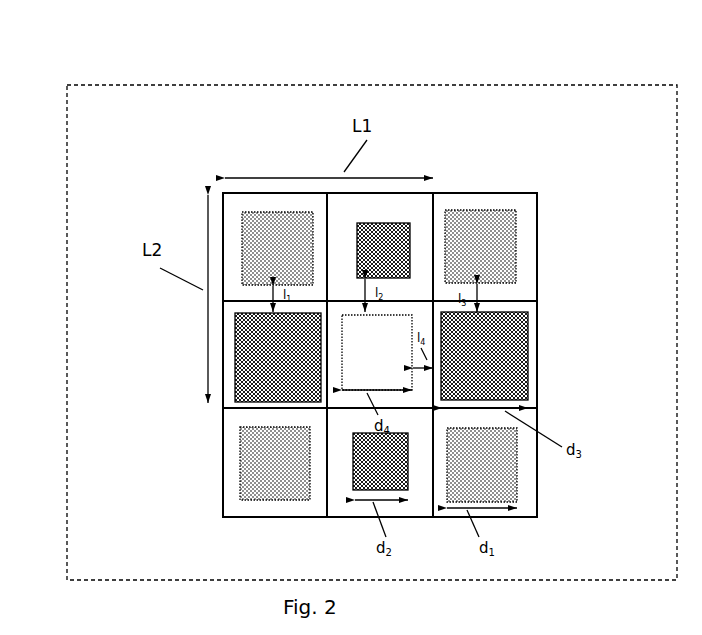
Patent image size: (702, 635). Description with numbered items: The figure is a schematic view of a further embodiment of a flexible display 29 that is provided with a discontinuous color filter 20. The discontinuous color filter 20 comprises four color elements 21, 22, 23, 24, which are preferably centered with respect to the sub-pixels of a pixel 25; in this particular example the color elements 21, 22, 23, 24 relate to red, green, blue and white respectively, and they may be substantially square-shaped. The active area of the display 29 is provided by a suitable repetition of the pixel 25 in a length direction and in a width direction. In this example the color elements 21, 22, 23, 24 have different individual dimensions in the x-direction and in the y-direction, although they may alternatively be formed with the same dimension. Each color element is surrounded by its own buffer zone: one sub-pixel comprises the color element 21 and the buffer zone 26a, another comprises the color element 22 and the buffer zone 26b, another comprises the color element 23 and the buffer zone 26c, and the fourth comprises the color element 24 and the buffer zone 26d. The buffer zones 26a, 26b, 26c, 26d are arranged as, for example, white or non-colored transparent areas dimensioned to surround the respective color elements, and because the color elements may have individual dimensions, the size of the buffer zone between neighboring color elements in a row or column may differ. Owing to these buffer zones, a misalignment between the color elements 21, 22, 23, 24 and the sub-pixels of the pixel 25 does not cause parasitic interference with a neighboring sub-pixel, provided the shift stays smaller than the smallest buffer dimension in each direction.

The discontinuous color filter 20 is at (43, 50).
The color element 21 is at (278, 554).
The color element 22 is at (262, 237).
The color element 23 is at (377, 225).
The color element 24 is at (240, 350).
The pixel 25 is at (240, 192).
The buffer zone 26a is at (262, 208).
The buffer zone 26b is at (427, 206).
The buffer zone 26c is at (410, 393).
The buffer zone 26d is at (232, 403).
The flexible display 29 is at (579, 84).